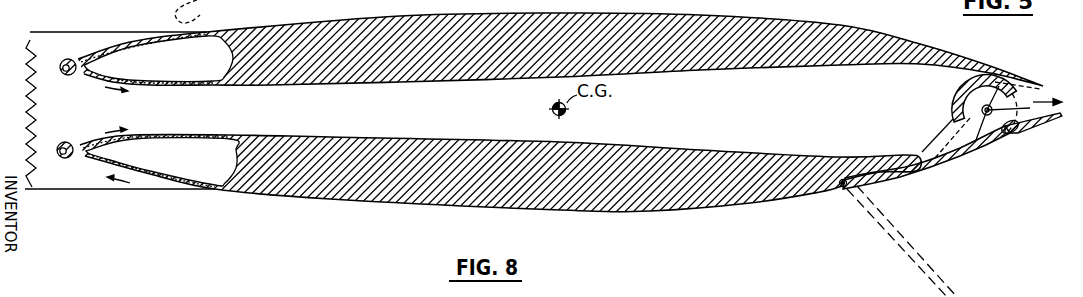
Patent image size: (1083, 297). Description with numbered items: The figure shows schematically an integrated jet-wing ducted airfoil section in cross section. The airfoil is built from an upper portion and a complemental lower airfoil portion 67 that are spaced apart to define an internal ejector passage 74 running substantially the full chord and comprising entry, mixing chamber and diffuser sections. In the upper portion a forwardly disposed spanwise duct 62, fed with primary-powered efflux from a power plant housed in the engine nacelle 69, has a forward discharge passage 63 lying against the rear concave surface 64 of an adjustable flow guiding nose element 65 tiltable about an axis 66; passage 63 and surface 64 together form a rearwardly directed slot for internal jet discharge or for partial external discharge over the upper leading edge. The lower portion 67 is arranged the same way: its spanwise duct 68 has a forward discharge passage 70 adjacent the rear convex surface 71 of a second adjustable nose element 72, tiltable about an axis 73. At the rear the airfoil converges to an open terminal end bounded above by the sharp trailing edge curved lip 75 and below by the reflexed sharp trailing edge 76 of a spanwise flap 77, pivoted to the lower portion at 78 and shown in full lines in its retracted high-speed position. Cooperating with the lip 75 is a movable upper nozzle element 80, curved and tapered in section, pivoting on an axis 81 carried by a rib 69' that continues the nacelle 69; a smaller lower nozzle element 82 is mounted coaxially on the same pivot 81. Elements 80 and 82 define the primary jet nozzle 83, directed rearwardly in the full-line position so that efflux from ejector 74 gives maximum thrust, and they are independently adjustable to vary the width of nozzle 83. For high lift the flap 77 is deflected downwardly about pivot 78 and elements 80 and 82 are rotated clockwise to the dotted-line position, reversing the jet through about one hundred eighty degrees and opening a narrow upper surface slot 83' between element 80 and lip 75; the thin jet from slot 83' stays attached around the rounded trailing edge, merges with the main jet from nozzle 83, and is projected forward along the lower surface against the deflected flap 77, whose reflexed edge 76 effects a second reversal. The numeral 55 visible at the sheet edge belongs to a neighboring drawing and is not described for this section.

In FIG. 5, the mast fitting (FIG. 5 fragment) 55 is at (213, 11).
In FIG. 8, the forwardly disposed spanwise duct 62 is at (157, 57).
In FIG. 8, the forward discharge passage 63 is at (97, 60).
In FIG. 8, the rear concave surface 64 is at (80, 78).
In FIG. 8, the adjustable flow guiding nose element 65 is at (63, 62).
In FIG. 8, the axis 66 is at (58, 76).
In FIG. 8, the lower airfoil portion 67 is at (322, 190).
In FIG. 8, the forwardly disposed spanwise duct 68 is at (178, 178).
In FIG. 8, the engine nacelle 69 is at (20, 113).
In FIG. 8, the forward discharge passage 70 is at (83, 152).
In FIG. 8, the rear convex surface 71 is at (78, 145).
In FIG. 8, the adjustable flow guiding nose element 72 is at (68, 160).
In FIG. 8, the axis 73 is at (62, 160).
In FIG. 8, the internal ejector passage 74 is at (654, 109).
In FIG. 8, the sharp trailing edge curved lip 75 is at (988, 74).
In FIG. 8, the reflexed sharp trailing edge 76 is at (1007, 141).
In FIG. 8, the spanwisely extending flap 77 is at (938, 176).
In FIG. 8, the pivot 78 is at (840, 188).
In FIG. 8, the movable upper nozzle element 80 is at (960, 88).
In FIG. 8, the axis 81 is at (960, 103).
In FIG. 8, the lower nozzle element 82 is at (1026, 117).
In FIG. 8, the primary jet nozzle 83 is at (1012, 132).
In FIG. 8, the upper surface slot 83' is at (1017, 59).
In FIG. 8, the rib 69' is at (946, 87).